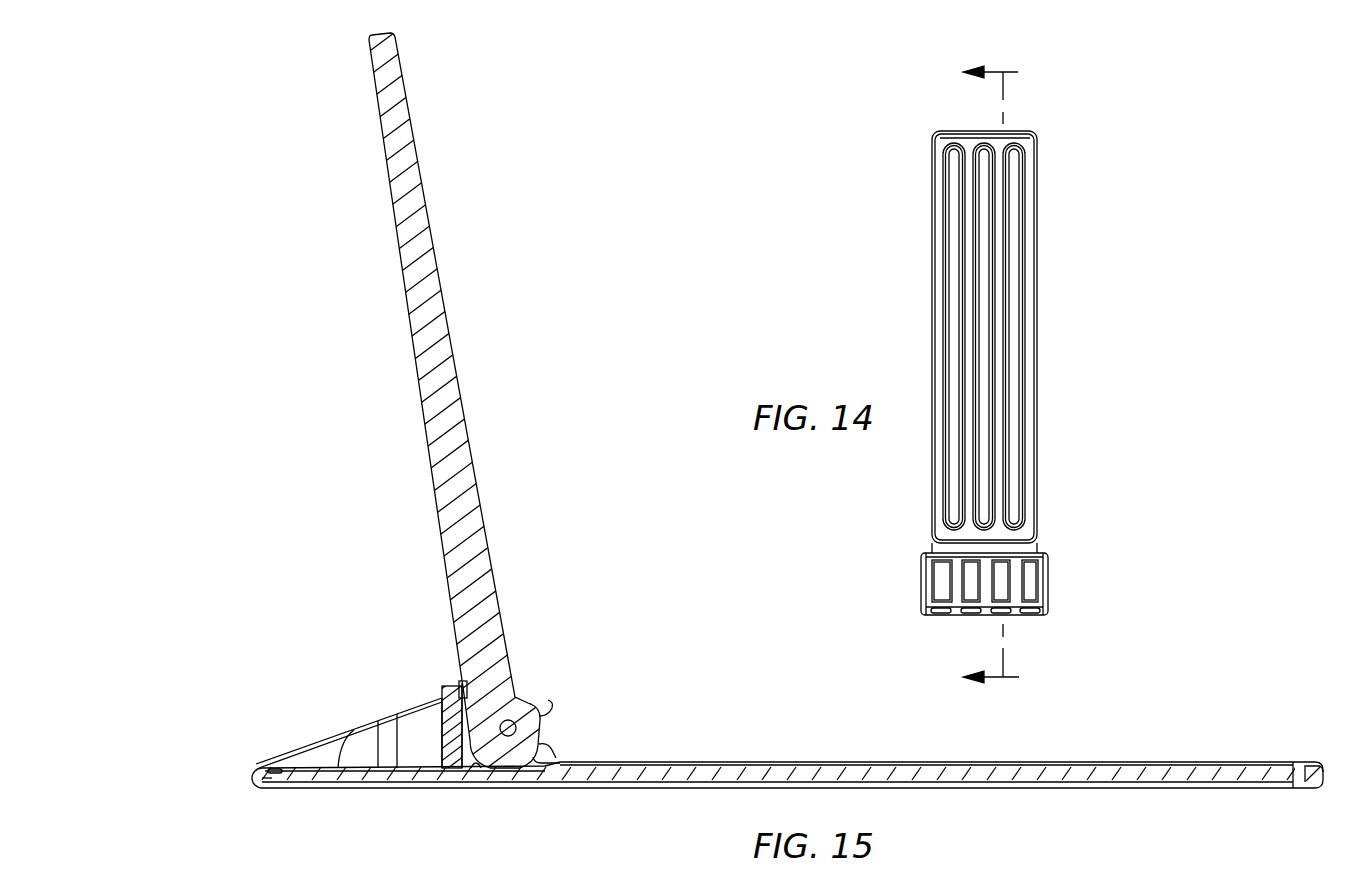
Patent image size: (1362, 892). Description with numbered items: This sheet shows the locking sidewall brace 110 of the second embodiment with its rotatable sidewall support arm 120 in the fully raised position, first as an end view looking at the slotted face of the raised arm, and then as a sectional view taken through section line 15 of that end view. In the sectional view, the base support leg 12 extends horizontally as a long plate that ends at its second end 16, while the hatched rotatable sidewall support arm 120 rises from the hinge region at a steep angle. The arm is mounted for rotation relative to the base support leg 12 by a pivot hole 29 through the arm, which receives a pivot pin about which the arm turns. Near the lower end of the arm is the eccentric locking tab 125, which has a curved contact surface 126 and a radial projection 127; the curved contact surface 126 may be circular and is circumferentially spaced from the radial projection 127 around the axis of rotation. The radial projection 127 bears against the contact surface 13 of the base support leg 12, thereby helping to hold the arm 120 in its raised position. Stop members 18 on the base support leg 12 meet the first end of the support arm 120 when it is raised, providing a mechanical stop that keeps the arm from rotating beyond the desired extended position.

In FIG. 15, the locking sidewall brace 110 is at (508, 292).
In FIG. 14, the locking sidewall brace 110 is at (887, 279).
In FIG. 15, the rotatable sidewall support arm 120 is at (457, 352).
In FIG. 14, the rotatable sidewall support arm 120 is at (1036, 331).
In FIG. 15, the base support leg 12 is at (1076, 776).
In FIG. 14, the base support leg 12 is at (1047, 583).
In FIG. 15, the contact surface 13 is at (475, 769).
In FIG. 14, the raised portion 15 is at (976, 374).
In FIG. 15, the second end 16 is at (1325, 773).
In FIG. 15, the stop members 18 is at (460, 684).
In FIG. 15, the pivot hole 29 is at (509, 719).
In FIG. 15, the eccentric locking tab 125 is at (552, 712).
In FIG. 15, the curved contact surface 126 is at (549, 749).
In FIG. 15, the radial projection 127 is at (520, 771).